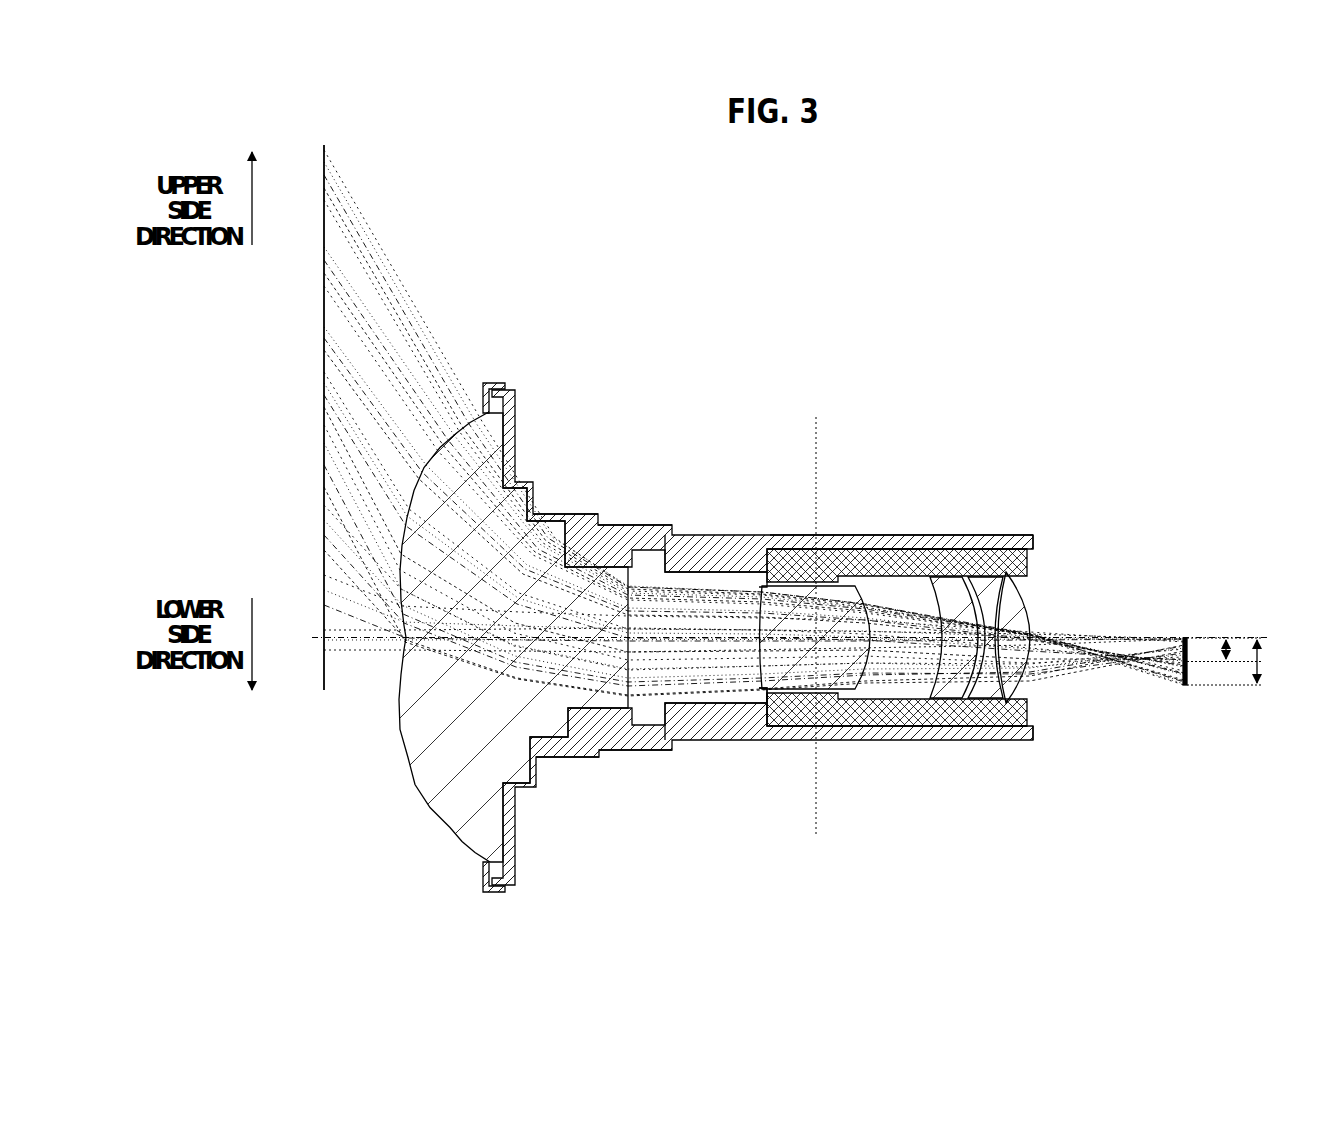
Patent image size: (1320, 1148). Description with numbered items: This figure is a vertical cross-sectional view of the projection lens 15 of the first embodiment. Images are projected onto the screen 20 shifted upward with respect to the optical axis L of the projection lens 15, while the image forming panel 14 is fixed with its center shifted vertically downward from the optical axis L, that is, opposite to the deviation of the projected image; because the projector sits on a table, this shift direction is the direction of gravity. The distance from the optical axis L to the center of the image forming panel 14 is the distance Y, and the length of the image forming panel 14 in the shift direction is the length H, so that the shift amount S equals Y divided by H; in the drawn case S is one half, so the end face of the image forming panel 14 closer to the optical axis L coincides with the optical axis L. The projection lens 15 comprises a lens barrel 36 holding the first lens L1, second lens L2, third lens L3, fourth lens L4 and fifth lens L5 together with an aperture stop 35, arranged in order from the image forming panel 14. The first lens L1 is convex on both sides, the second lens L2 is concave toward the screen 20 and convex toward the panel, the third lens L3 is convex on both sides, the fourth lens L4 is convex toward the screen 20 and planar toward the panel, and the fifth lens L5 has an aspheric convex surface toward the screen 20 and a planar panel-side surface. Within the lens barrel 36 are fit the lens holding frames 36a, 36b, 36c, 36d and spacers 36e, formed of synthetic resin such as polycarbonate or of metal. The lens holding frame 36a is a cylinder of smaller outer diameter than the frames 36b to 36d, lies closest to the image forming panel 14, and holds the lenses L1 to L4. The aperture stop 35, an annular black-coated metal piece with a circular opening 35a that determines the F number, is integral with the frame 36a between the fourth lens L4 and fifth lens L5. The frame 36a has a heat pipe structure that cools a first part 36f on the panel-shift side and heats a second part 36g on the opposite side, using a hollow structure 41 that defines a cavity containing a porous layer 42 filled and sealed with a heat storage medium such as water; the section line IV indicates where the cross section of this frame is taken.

The image forming panel 14 is at (1183, 636).
The projection lens 15 is at (904, 405).
The screen 20 is at (323, 235).
The aperture stop 35 is at (758, 585).
The circular opening 35a is at (762, 682).
The lens barrel 36 is at (763, 596).
The lens holding frame 36a is at (835, 536).
The lens holding frame 36b is at (650, 525).
The lens holding frame 36c is at (580, 514).
The lens holding frame 36d is at (488, 383).
The spacer 36e is at (1003, 538).
The first part 36f is at (872, 731).
The second part 36g is at (877, 540).
The hollow structure 41 is at (840, 740).
The porous layer 42 is at (755, 715).
The optical axis L is at (350, 640).
The first lens L1 is at (1040, 712).
The second lens L2 is at (966, 720).
The third lens L3 is at (915, 722).
The fourth lens L4 is at (800, 733).
The fifth lens L5 is at (603, 680).
The section line IV is at (811, 436).
The distance Y is at (1214, 632).
The length H is at (1246, 644).